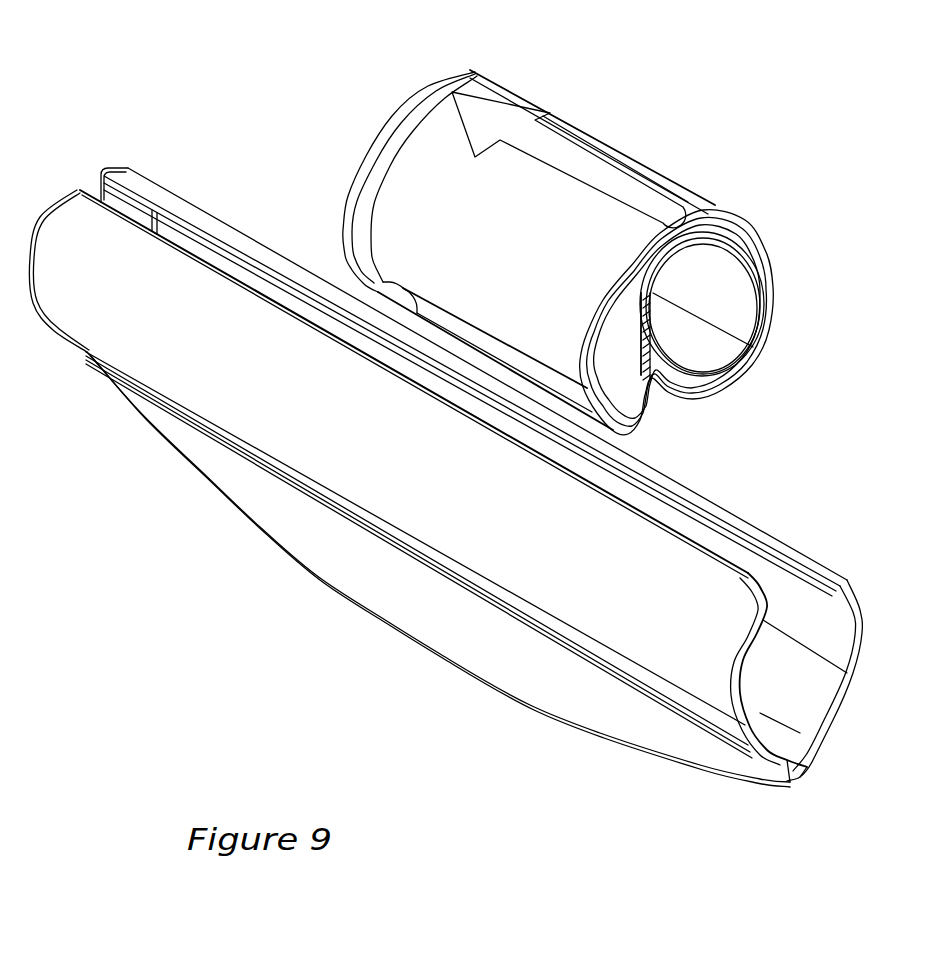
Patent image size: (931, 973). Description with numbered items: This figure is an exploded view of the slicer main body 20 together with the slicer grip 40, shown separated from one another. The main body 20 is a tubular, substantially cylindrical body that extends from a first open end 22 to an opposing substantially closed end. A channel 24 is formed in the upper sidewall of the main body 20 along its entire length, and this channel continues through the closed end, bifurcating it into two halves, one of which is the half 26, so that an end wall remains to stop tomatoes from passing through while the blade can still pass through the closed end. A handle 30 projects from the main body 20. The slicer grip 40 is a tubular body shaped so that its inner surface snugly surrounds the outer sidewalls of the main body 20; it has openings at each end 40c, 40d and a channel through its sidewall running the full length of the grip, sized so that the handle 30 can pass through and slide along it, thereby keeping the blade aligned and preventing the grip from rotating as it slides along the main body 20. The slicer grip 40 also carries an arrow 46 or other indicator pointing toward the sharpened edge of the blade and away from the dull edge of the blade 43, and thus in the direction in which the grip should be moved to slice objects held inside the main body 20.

The tubular main body 20 is at (213, 395).
The first open end 22 is at (812, 690).
The channel 24 is at (710, 537).
The half of closed end 26 is at (125, 205).
The handle 30 is at (313, 560).
The slicer grip 40 is at (632, 150).
The end opening of slicer grip 40c is at (453, 78).
The end opening of slicer grip 40d is at (712, 220).
The dull edge of the blade 43 is at (650, 347).
The arrow 46 is at (563, 152).